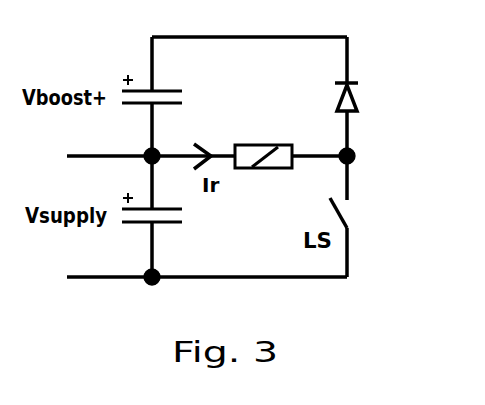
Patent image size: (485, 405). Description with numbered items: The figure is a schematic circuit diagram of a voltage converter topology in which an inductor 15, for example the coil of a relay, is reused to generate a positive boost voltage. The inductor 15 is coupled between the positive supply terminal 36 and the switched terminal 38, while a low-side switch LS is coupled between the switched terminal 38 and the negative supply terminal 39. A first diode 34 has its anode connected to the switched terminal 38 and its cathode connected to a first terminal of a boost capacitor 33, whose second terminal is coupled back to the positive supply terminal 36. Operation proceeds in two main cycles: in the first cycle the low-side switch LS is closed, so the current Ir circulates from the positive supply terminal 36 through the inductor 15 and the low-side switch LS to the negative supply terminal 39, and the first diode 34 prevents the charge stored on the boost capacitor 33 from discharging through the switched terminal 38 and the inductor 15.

The inductor 15 is at (272, 143).
The boost capacitor 33 is at (178, 90).
The first diode 34 is at (355, 97).
The positive supply terminal 36 is at (147, 152).
The switched terminal 38 is at (355, 155).
The negative supply terminal 39 is at (147, 283).